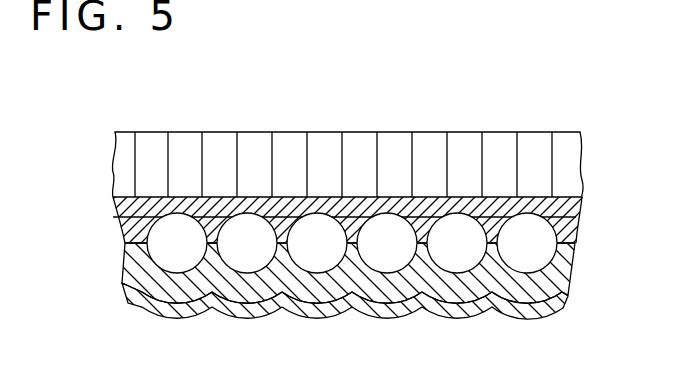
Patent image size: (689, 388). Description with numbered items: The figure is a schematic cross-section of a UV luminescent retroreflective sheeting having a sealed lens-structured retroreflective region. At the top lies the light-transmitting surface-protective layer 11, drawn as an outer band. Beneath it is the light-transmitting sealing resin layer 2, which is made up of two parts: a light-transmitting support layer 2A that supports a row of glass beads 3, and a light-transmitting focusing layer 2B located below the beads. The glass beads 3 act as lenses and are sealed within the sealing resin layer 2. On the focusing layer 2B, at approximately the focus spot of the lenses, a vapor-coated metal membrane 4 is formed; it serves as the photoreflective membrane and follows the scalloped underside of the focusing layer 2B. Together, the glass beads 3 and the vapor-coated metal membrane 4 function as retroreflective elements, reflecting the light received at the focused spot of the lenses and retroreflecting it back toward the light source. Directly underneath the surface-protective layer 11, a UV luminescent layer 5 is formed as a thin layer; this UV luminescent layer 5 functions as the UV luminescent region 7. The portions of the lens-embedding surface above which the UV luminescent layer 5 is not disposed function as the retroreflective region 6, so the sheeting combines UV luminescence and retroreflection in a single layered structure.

The sealing resin layer 2 is at (396, 192).
The support layer 2A is at (376, 162).
The focusing layer 2B is at (381, 273).
The glass beads 3 is at (183, 230).
The vapor-coated metal membrane 4 is at (556, 312).
The UV luminescent layer 5 is at (347, 151).
The retroreflective region 6 is at (229, 213).
The UV luminescent region 7 is at (376, 205).
The surface-protective layer 11 is at (543, 150).